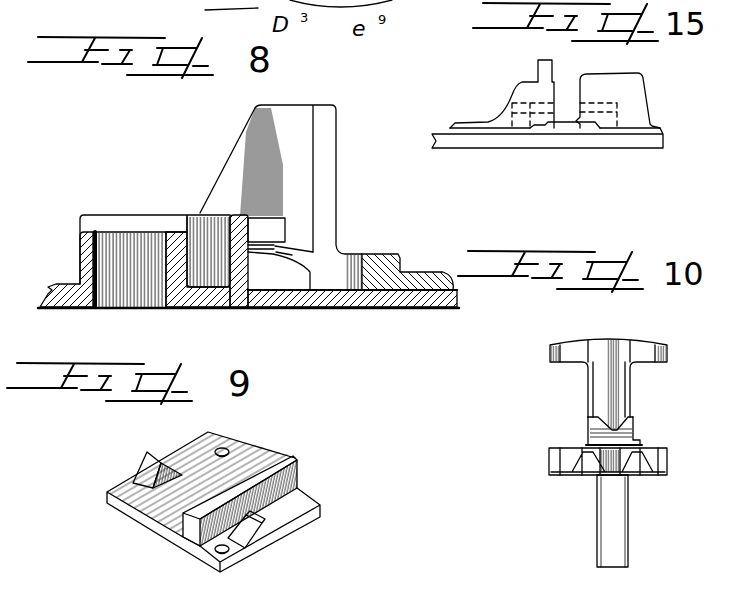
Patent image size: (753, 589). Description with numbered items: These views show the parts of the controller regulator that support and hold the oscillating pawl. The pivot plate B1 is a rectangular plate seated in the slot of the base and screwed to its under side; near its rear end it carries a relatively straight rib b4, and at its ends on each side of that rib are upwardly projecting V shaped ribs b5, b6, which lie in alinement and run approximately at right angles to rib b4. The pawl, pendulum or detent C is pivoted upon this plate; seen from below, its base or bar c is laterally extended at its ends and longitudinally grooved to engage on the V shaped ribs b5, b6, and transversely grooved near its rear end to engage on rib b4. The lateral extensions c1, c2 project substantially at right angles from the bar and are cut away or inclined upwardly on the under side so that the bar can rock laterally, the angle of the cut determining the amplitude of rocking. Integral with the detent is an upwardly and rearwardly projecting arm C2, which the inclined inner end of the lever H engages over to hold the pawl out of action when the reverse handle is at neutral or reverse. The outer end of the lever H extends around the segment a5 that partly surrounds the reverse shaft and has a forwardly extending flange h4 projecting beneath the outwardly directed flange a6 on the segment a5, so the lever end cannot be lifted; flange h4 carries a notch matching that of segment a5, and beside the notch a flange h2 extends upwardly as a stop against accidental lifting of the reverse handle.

In FIG. 8, the lever H is at (410, 280).
In FIG. 15, the lever H is at (572, 125).
In FIG. 8, the segment a5 is at (173, 223).
In FIG. 15, the segment a5 is at (563, 103).
In FIG. 8, the outwardly directed flange a6 is at (263, 228).
In FIG. 8, the flange h2 is at (327, 172).
In FIG. 15, the flange h2 is at (630, 85).
In FIG. 8, the forwardly extending flange h4 is at (298, 250).
In FIG. 9, the pivot plate B1 is at (240, 468).
In FIG. 9, the rib b4 is at (295, 460).
In FIG. 9, the V shaped rib b5 is at (160, 440).
In FIG. 9, the V shaped rib b6 is at (262, 530).
In FIG. 10, the lateral extension c1 is at (530, 466).
In FIG. 10, the lateral extension c2 is at (662, 348).
In FIG. 10, the pawl C is at (600, 398).
In FIG. 10, the bar c is at (633, 408).
In FIG. 10, the arm C2 is at (612, 540).